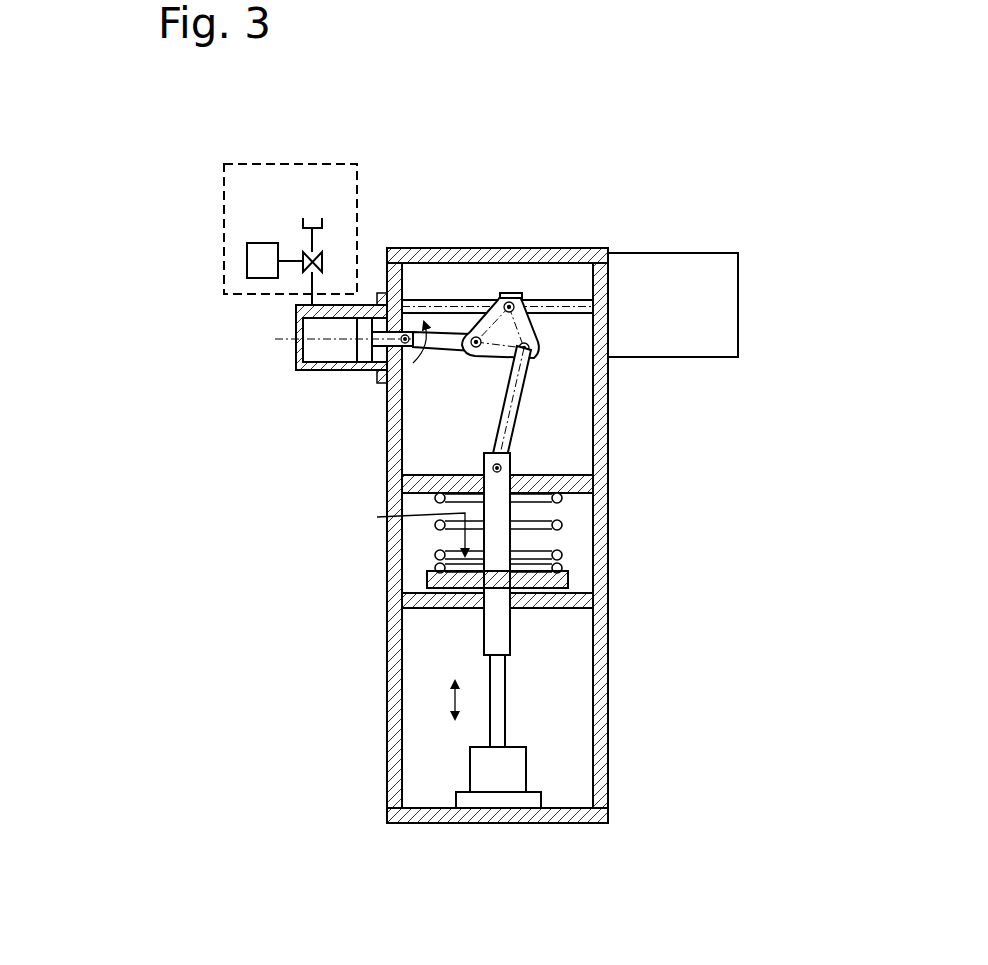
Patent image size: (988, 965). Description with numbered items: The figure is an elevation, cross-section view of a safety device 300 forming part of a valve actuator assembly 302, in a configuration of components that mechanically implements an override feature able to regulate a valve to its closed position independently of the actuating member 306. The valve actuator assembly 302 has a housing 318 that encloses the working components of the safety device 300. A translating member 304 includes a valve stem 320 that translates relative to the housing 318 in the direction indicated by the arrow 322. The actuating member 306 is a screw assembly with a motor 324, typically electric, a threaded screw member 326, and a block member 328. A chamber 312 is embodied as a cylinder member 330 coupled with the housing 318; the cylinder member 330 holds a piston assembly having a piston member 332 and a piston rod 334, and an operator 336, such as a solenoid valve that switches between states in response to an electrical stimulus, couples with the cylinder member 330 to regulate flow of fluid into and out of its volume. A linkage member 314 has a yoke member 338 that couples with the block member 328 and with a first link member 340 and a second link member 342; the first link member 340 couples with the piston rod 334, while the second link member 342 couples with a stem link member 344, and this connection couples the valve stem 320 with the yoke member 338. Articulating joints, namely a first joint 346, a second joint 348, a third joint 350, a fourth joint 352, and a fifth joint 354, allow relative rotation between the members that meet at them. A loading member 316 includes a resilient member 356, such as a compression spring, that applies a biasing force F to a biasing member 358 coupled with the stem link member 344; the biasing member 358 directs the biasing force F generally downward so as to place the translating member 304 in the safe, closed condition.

The safety device 300 is at (101, 345).
The valve actuator assembly 302 is at (724, 144).
The translating member 304 is at (792, 618).
The actuating member 306 is at (792, 248).
The chamber 312 is at (300, 364).
The linkage member 314 is at (792, 343).
The loading member 316 is at (792, 478).
The housing 318 is at (387, 758).
The valve stem 320 is at (508, 728).
The arrow 322 is at (452, 697).
The motor 324 is at (667, 253).
The threaded screw member 326 is at (560, 298).
The block member 328 is at (516, 300).
The cylinder member 330 is at (325, 372).
The piston member 332 is at (360, 348).
The piston rod 334 is at (385, 318).
The operator 336 is at (315, 164).
The yoke member 338 is at (566, 307).
The first link member 340 is at (448, 352).
The second link member 342 is at (516, 400).
The stem link member 344 is at (500, 637).
The first joint 346 is at (403, 345).
The second joint 348 is at (468, 352).
The third joint 350 is at (505, 298).
The fourth joint 352 is at (529, 352).
The fifth joint 354 is at (502, 468).
The resilient member 356 is at (422, 557).
The biasing member 358 is at (440, 580).
The biasing force F is at (411, 533).